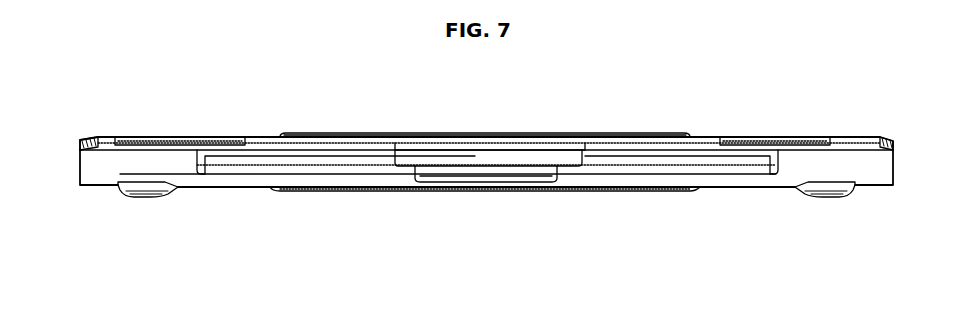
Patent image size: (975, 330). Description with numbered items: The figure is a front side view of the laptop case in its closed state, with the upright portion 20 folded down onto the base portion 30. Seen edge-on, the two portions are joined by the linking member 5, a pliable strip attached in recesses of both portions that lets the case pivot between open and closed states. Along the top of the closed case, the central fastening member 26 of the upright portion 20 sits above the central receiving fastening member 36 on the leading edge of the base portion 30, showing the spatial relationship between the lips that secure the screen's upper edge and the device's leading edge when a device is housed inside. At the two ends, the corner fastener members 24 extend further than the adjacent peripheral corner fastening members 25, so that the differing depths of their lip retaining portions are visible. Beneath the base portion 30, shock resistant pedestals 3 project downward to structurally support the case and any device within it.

The upright portion 20 is at (684, 97).
The base portion 30 is at (608, 247).
The corner fastener member 24 is at (80, 146).
The peripheral corner fastening member 25 is at (133, 158).
The central fastening member 26 is at (460, 152).
The central receiving fastening member 36 is at (496, 177).
The linking member 5 is at (320, 192).
The shock resistant pedestal 3 is at (130, 192).